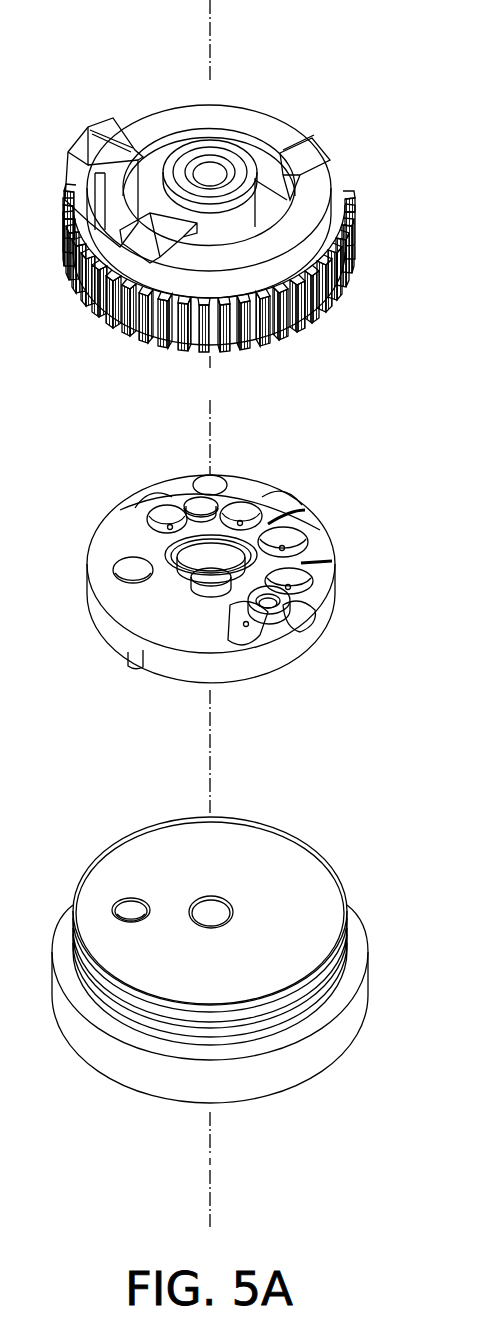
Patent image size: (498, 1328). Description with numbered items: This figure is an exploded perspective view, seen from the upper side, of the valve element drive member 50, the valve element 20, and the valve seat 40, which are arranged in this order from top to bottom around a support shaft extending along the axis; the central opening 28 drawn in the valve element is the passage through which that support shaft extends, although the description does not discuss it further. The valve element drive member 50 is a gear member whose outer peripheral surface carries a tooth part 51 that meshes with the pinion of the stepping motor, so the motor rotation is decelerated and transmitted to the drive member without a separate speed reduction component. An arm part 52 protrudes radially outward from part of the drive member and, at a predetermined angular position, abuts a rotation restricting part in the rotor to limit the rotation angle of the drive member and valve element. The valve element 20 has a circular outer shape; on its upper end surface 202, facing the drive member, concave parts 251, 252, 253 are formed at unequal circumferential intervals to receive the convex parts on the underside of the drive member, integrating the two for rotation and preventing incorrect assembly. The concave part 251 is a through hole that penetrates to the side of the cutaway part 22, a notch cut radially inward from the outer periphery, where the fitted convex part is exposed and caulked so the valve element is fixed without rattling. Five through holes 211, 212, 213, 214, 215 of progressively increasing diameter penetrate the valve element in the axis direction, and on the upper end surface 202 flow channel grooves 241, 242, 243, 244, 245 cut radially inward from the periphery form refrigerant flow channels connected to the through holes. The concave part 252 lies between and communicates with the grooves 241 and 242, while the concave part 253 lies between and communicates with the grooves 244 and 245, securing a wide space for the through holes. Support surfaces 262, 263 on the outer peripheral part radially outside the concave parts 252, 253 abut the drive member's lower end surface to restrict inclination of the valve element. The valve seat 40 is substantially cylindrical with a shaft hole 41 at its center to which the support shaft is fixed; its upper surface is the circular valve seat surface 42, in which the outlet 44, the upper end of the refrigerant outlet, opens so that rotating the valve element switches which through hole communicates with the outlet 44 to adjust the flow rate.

The valve element drive member 50 is at (322, 130).
The tooth part 51 is at (355, 213).
The arm part 52 is at (68, 138).
The valve element 20 is at (328, 472).
The cutaway part 22 is at (105, 630).
The upper end surface 202 is at (140, 617).
The central hole 28 is at (210, 590).
The through hole 211 is at (262, 615).
The through hole 212 is at (313, 586).
The through hole 213 is at (283, 547).
The through hole 214 is at (240, 522).
The through hole 215 is at (170, 527).
The flow channel groove 241 is at (262, 640).
The flow channel groove 242 is at (328, 571).
The flow channel groove 243 is at (268, 525).
The flow channel groove 244 is at (263, 497).
The flow channel groove 245 is at (147, 502).
The concave part 251 is at (125, 565).
The concave part 252 is at (277, 618).
The concave part 253 is at (196, 504).
The support surface 262 is at (313, 610).
The support surface 263 is at (215, 483).
The valve seat 40 is at (343, 853).
The shaft hole 41 is at (202, 907).
The valve seat surface 42 is at (262, 939).
The outlet 44 is at (120, 905).